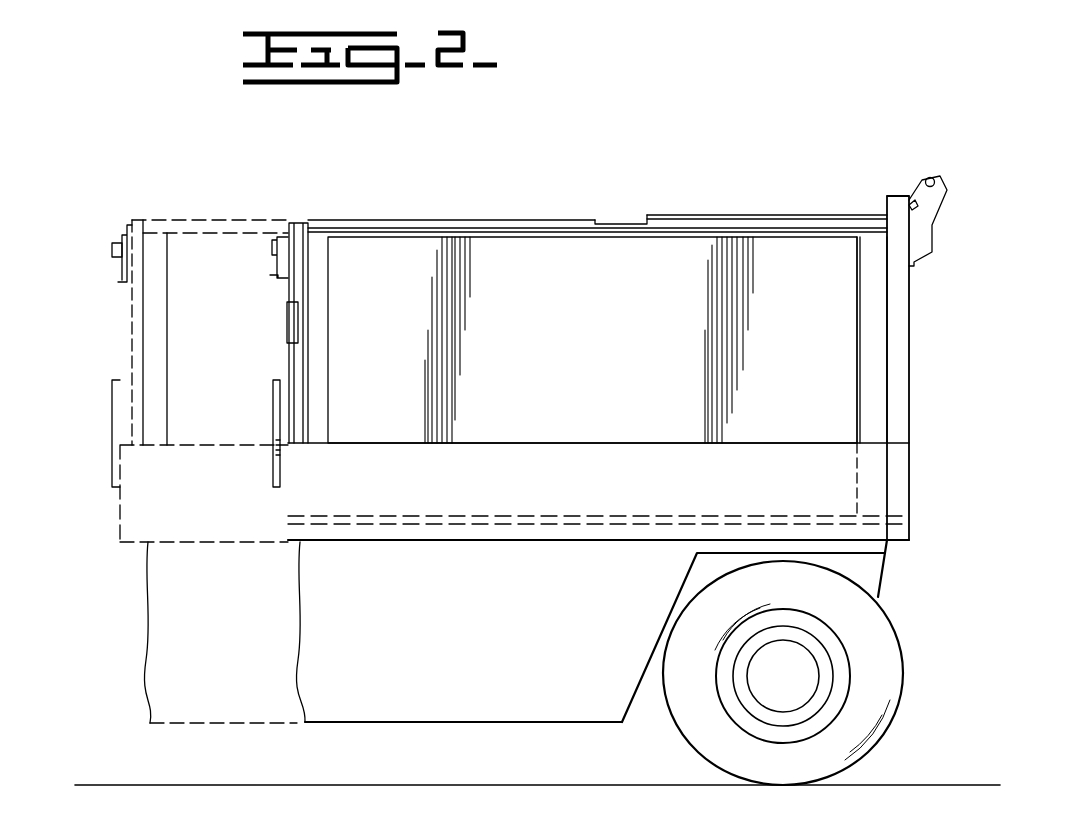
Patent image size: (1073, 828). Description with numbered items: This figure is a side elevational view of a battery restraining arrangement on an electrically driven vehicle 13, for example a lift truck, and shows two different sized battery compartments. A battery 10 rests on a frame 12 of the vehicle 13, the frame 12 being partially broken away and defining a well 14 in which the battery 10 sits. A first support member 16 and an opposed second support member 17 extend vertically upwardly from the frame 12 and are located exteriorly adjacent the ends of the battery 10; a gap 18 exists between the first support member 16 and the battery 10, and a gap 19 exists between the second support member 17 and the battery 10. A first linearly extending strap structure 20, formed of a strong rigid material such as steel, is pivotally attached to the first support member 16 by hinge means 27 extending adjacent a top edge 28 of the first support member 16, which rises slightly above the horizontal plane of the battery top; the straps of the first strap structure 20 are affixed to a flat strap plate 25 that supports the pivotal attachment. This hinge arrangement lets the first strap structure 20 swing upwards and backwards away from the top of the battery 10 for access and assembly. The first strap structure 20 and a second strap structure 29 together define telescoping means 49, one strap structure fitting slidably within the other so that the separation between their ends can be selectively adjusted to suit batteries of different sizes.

The battery 10 is at (838, 322).
The frame 12 is at (565, 662).
The electrically driven vehicle 13 is at (956, 485).
The well 14 is at (868, 487).
The first support member 16 is at (903, 272).
The second support member 17 is at (132, 325).
The gap 18 is at (873, 272).
The gap 19 is at (313, 272).
The first linearly extending strap structure 20 is at (634, 216).
The flat strap plate 25 is at (778, 215).
The hinge means 27 is at (937, 191).
The top edge 28 is at (897, 196).
The second strap structure 29 is at (471, 216).
The telescoping means 49 is at (594, 206).